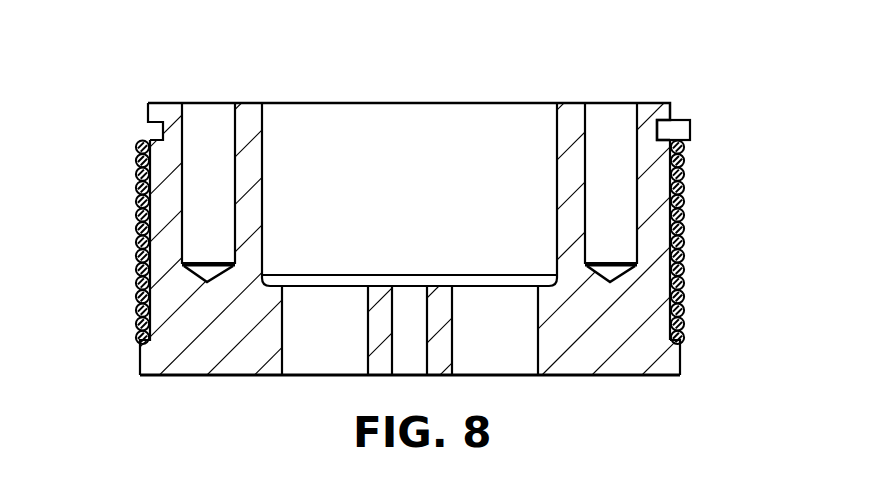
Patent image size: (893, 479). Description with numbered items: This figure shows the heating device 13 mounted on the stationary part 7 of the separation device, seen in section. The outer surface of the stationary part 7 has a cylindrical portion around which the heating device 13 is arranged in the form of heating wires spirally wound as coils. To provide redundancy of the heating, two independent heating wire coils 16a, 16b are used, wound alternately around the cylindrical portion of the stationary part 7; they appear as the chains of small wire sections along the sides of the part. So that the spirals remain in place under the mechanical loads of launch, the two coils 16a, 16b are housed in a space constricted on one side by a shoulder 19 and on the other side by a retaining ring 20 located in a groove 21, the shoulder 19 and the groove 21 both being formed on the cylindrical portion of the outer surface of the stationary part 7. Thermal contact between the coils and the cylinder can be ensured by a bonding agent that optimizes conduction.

The stationary part 7 is at (435, 98).
The retaining ring 20 is at (681, 107).
The groove 21 is at (150, 129).
The heating wire coil 16a is at (686, 147).
The heating wire coil 16b is at (686, 160).
The heating device 13 is at (714, 252).
The shoulder 19 is at (699, 354).